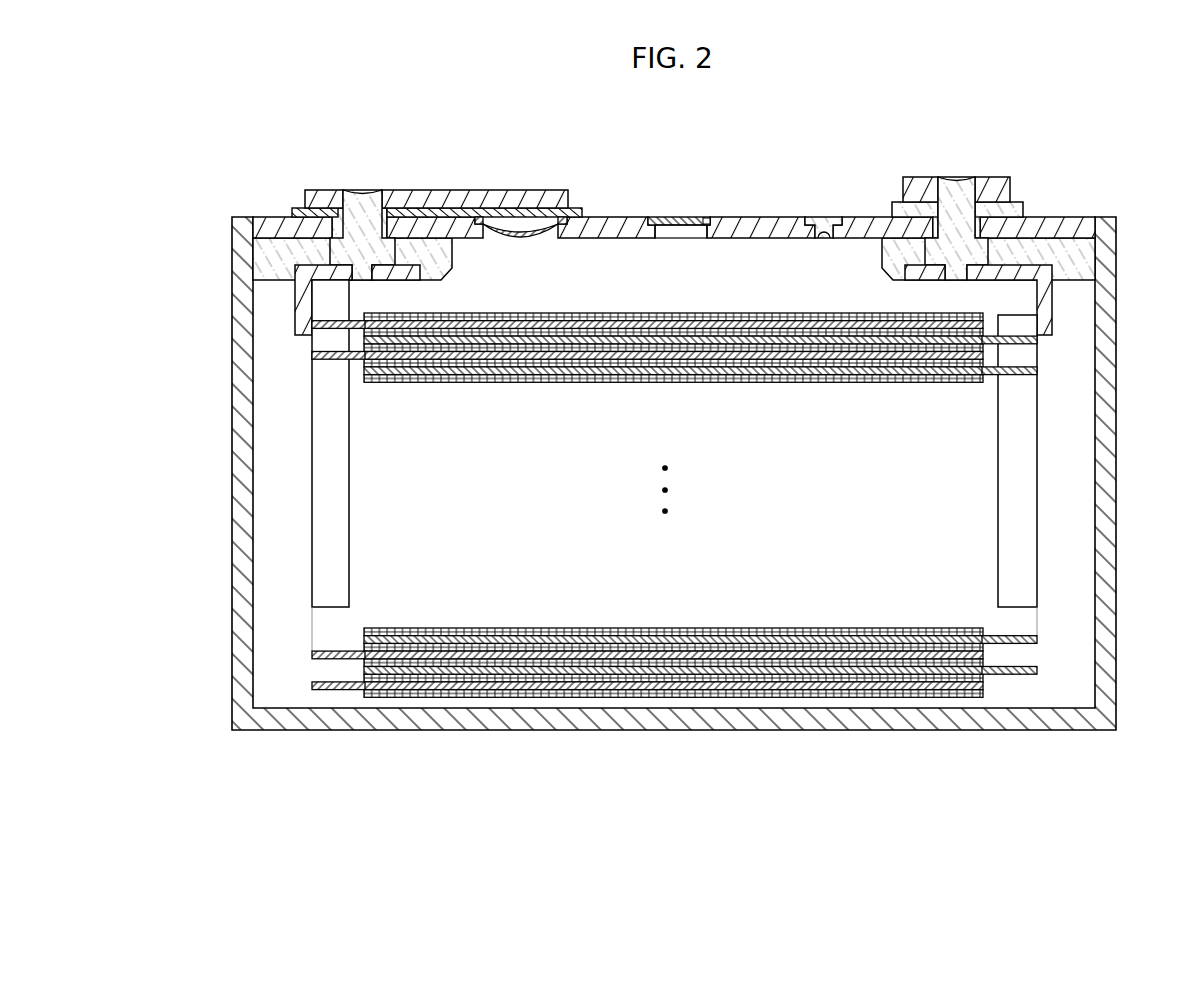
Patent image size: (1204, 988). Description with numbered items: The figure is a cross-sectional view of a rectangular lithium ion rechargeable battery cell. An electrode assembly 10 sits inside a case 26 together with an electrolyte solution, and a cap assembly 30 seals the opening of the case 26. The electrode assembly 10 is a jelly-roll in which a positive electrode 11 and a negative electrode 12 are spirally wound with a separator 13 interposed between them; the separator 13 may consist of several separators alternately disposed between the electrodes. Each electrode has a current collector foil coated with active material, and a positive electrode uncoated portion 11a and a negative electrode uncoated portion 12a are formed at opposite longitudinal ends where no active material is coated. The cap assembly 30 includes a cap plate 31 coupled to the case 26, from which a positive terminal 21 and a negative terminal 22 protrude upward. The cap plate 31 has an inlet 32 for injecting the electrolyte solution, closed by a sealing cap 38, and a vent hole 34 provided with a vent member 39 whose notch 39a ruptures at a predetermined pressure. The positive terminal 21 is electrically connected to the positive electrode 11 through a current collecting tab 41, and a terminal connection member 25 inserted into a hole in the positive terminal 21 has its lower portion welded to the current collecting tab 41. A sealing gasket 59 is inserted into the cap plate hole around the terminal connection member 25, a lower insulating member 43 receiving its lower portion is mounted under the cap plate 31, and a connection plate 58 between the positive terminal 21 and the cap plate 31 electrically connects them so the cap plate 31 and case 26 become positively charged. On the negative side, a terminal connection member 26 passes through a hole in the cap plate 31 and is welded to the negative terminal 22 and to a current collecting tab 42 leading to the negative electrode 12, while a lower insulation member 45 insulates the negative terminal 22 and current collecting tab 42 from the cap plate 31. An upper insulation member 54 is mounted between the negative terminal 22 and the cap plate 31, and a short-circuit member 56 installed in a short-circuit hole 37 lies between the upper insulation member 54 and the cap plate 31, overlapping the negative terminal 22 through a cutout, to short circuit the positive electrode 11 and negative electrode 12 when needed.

The electrode assembly 10 is at (672, 550).
The positive electrode 11 is at (880, 670).
The positive electrode uncoated portion 11a is at (1017, 670).
The negative electrode 12 is at (460, 688).
The negative electrode uncoated portion 12a is at (326, 690).
The separator 13 is at (678, 662).
The positive terminal 21 is at (990, 185).
The negative terminal 22 is at (322, 192).
The terminal connection member 25 is at (957, 193).
The case 26 is at (1116, 510).
The cap assembly 30 is at (767, 217).
The cap plate 31 is at (1078, 222).
The inlet 32 is at (818, 240).
The vent hole 34 is at (678, 240).
The short-circuit hole 37 is at (480, 217).
The sealing cap 38 is at (822, 217).
The vent member 39 is at (706, 217).
The notch 39a is at (682, 217).
The current collecting tab 41 is at (1025, 352).
The current collecting tab 42 is at (322, 418).
The lower insulating member 43 is at (1075, 258).
The lower insulation member 45 is at (270, 258).
The upper insulation member 54 is at (430, 192).
The short-circuit member 56 is at (520, 228).
The connection plate 58 is at (1023, 212).
The sealing gasket 59 is at (932, 230).